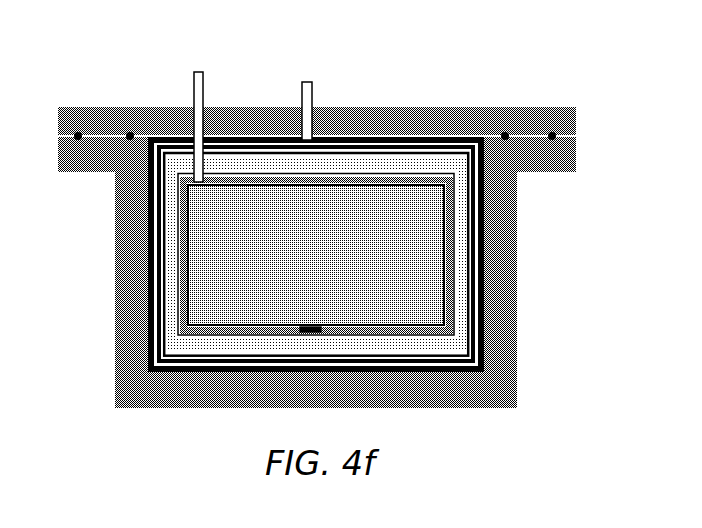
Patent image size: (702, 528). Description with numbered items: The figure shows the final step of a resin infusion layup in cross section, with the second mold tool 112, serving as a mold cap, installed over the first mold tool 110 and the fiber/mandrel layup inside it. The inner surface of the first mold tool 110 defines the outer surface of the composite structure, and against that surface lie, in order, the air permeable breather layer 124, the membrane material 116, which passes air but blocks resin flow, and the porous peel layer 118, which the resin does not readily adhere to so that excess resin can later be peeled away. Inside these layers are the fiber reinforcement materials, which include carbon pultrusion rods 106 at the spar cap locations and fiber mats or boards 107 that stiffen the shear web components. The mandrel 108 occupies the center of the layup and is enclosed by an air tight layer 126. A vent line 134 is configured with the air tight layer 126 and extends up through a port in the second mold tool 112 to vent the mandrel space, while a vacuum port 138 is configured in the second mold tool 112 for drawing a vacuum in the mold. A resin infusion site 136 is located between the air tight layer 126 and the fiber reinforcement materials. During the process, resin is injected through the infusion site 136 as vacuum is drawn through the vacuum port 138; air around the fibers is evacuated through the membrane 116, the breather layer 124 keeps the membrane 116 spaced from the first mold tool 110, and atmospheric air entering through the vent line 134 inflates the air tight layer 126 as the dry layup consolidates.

The carbon pultrusion rods 106 is at (317, 177).
The fiber mats or boards 107 is at (452, 312).
The mandrel 108 is at (428, 255).
The first mold tool 110 is at (115, 262).
The second mold tool 112 is at (540, 106).
The membrane material 116 is at (272, 146).
The peel layer 118 is at (349, 150).
The breather layer 124 is at (247, 140).
The air tight layer 126 is at (428, 180).
The vent line 134 is at (192, 90).
The resin infusion/injection site 136 is at (310, 327).
The vacuum port 138 is at (308, 81).